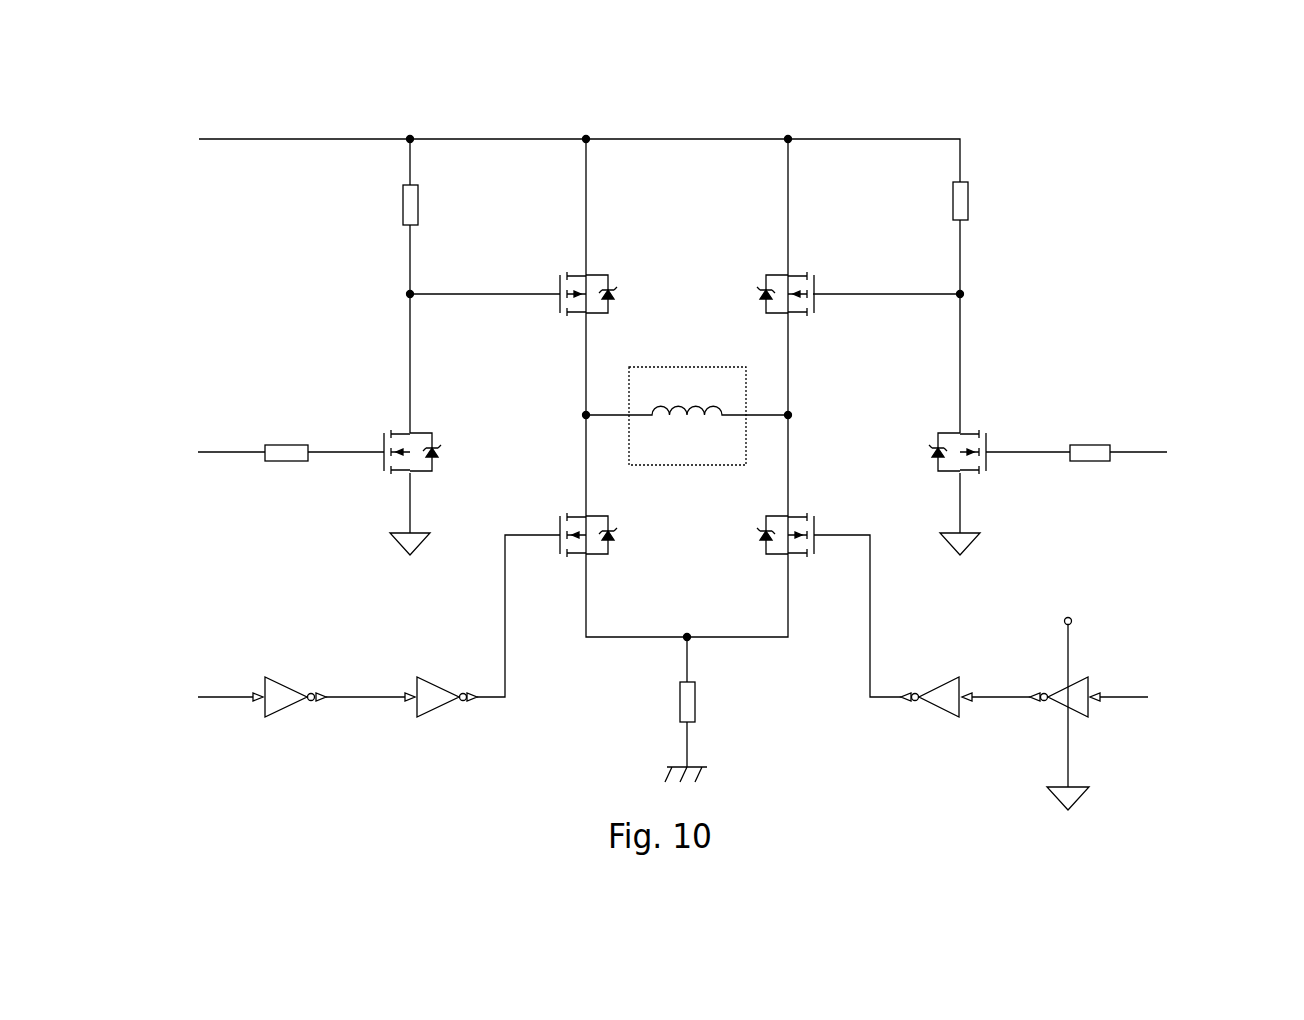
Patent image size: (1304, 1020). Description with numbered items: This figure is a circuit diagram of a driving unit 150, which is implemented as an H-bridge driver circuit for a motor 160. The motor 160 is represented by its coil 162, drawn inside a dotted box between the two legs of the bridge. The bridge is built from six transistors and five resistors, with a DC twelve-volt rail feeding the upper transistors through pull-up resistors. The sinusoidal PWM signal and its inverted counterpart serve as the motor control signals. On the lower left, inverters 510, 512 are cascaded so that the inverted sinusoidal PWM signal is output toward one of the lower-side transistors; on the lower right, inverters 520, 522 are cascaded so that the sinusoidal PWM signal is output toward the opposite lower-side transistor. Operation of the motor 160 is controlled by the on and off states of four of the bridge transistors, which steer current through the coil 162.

The driving unit 150 is at (88, 88).
The motor 160 is at (676, 366).
The coil 162 is at (706, 418).
The inverter 510 is at (287, 676).
The inverter 512 is at (437, 676).
The inverter 520 is at (1091, 678).
The inverter 522 is at (937, 675).